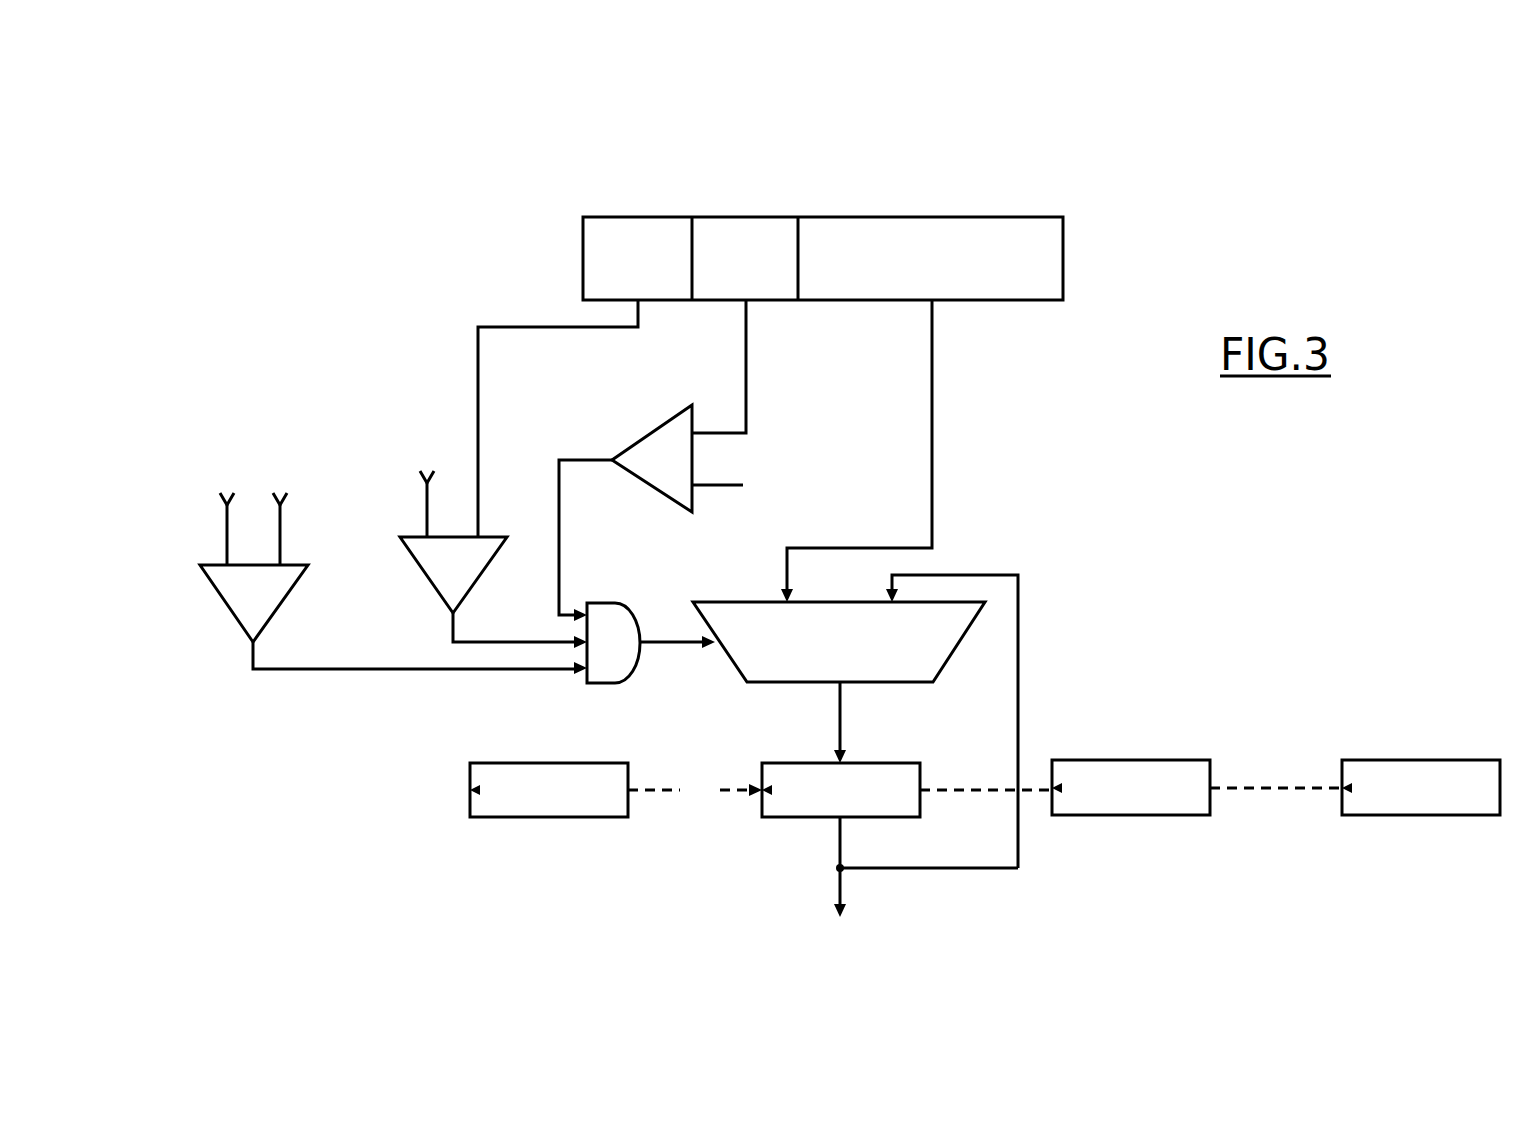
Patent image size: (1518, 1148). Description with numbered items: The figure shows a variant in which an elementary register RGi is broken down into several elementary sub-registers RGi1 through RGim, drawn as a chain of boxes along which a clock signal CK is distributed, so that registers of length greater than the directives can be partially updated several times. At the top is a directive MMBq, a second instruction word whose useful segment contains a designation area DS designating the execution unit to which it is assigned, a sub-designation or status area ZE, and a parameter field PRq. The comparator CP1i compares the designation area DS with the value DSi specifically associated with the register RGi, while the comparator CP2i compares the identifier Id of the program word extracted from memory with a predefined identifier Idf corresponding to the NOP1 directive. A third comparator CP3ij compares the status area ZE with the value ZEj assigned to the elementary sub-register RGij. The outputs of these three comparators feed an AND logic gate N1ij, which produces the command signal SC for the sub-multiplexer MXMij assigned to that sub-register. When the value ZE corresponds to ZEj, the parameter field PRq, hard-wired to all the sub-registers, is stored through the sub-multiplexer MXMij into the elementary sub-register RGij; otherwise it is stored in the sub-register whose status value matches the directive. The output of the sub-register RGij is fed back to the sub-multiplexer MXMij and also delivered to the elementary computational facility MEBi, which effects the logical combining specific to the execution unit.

The second base word MMBq is at (880, 208).
The designation area DS is at (585, 377).
The sub-designation area ZE is at (745, 325).
The parameter field PRq is at (868, 423).
The comparator CP3ij is at (647, 436).
The sub-register status value ZEj is at (739, 485).
The comparator CP1i is at (430, 588).
The register designation value DSi is at (428, 489).
The comparator CP2i is at (233, 614).
The program word identifier Id is at (228, 515).
The predefined identifier Idf is at (283, 515).
The AND logic gate N1ij is at (600, 603).
The command signal SC is at (677, 645).
The sub-multiplexer MXMij is at (855, 721).
The elementary sub-register RGij is at (912, 763).
The elementary computational facility MEBi is at (851, 936).
The first elementary sub-register RGi1 is at (545, 817).
The clock signal CK is at (695, 791).
The last elementary sub-register RGim is at (1417, 815).
The elementary register RGi is at (1075, 688).